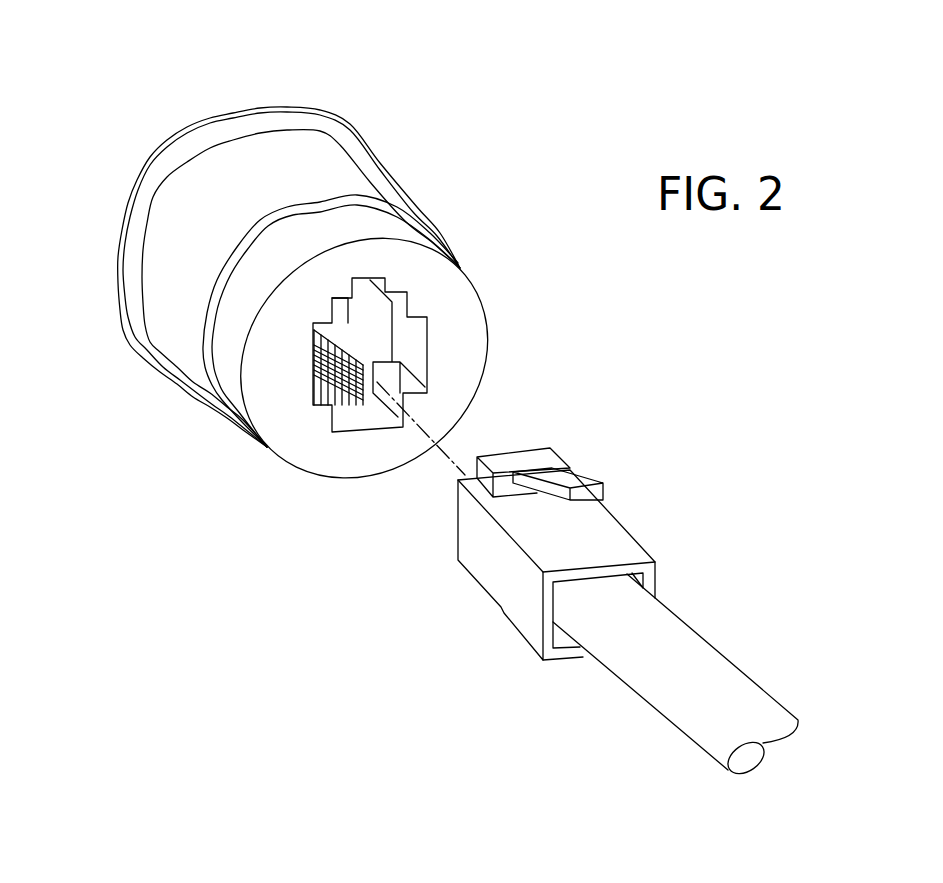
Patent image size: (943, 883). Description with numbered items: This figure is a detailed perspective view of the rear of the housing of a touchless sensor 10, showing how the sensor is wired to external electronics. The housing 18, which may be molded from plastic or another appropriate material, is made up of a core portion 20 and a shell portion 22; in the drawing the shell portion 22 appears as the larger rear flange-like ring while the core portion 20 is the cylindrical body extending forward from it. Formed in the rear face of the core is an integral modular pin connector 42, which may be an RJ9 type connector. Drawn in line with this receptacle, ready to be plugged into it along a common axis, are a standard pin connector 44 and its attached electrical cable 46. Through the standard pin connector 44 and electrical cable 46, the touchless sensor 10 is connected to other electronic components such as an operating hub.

The touchless sensor 10 is at (140, 93).
The housing 18 is at (310, 292).
The core portion 20 is at (232, 395).
The shell portion 22 is at (357, 137).
The integral modular pin connector 42 is at (357, 420).
The standard pin connector 44 is at (607, 527).
The electrical cable 46 is at (645, 680).